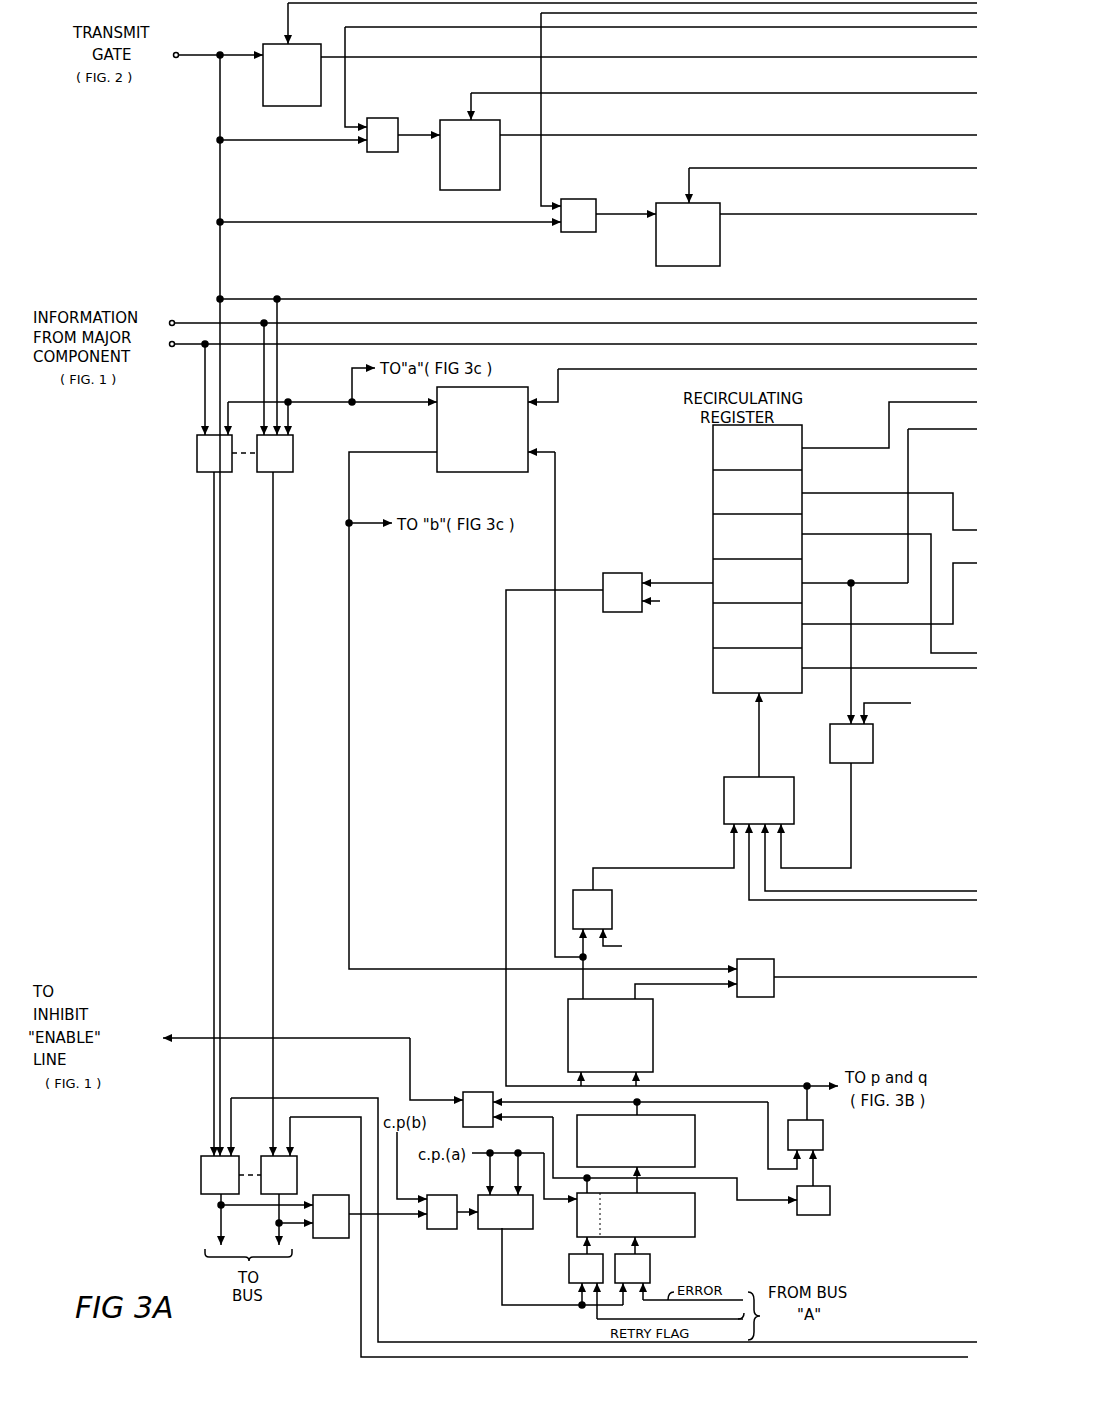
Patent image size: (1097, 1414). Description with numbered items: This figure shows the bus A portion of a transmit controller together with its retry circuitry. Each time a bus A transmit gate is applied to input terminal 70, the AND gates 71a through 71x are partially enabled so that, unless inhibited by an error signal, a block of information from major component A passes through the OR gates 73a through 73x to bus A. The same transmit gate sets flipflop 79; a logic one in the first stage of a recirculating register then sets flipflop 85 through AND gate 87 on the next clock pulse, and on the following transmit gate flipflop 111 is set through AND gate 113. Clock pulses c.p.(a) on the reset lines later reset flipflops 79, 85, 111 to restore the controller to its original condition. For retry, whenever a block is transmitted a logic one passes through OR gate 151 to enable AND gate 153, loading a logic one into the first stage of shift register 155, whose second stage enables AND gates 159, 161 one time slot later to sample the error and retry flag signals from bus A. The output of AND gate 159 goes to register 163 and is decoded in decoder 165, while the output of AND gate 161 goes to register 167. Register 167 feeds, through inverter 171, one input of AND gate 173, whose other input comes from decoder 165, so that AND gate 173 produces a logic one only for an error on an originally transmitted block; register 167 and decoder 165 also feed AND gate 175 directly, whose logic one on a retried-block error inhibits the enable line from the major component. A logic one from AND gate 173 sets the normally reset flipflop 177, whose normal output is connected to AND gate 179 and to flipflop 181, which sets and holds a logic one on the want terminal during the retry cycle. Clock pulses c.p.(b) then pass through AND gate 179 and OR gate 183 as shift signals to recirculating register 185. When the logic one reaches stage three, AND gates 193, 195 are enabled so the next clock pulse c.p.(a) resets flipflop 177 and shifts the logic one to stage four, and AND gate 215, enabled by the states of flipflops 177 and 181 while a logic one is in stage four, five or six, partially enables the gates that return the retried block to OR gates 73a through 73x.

The input terminal 70 is at (176, 53).
The flipflop 79 is at (275, 106).
The AND gate 87 is at (378, 118).
The flipflop 85 is at (440, 178).
The AND gate 113 is at (578, 199).
The flipflop 111 is at (656, 255).
The AND gate 71a is at (197, 462).
The AND gate 71x is at (293, 465).
The flipflop 181 is at (530, 420).
The recirculating register 185 is at (713, 675).
The AND gate 193 is at (630, 612).
The AND gate 195 is at (873, 745).
The OR gate 183 is at (731, 777).
The AND gate 179 is at (612, 906).
The AND gate 215 is at (752, 959).
The flipflop 177 is at (653, 1025).
The AND gate 175 is at (476, 1092).
The AND gate 173 is at (823, 1130).
The inverter 171 is at (830, 1195).
The decoder 165 is at (695, 1130).
The register 163 is at (695, 1222).
The register 167 is at (577, 1232).
The AND gate 161 is at (569, 1272).
The AND gate 159 is at (650, 1264).
The AND gate 153 is at (435, 1229).
The shift register 155 is at (488, 1229).
The OR gate 151 is at (328, 1238).
The OR gate 73a is at (201, 1172).
The OR gate 73x is at (297, 1170).